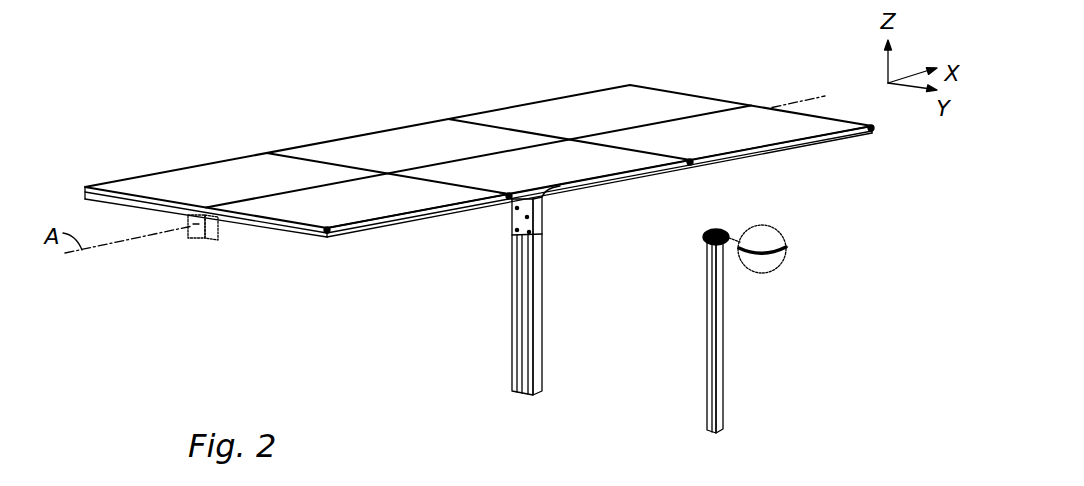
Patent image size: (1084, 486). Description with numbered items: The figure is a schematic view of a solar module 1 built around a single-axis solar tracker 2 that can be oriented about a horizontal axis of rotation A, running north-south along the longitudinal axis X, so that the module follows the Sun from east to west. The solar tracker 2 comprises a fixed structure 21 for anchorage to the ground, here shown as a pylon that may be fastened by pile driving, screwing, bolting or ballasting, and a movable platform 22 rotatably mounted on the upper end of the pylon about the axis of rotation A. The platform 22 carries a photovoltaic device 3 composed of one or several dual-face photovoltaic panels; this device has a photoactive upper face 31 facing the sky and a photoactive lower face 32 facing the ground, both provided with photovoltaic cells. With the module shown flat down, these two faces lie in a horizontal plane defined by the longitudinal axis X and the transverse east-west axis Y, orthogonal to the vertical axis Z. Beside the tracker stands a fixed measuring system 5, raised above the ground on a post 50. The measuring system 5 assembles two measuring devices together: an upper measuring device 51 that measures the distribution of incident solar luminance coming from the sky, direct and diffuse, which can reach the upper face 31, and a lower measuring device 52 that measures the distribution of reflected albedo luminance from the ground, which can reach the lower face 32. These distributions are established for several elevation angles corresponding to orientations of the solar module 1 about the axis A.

The solar module 1 is at (199, 100).
The single-axis solar tracker 2 is at (490, 327).
The photovoltaic device 3 is at (361, 126).
The measuring system 5 is at (777, 206).
The fixed structure 21 is at (545, 327).
The movable platform 22 is at (238, 248).
The photoactive upper face 31 is at (550, 122).
The photoactive lower face 32 is at (387, 224).
The post 50 is at (718, 382).
The upper measuring device 51 is at (773, 242).
The lower measuring device 52 is at (773, 263).